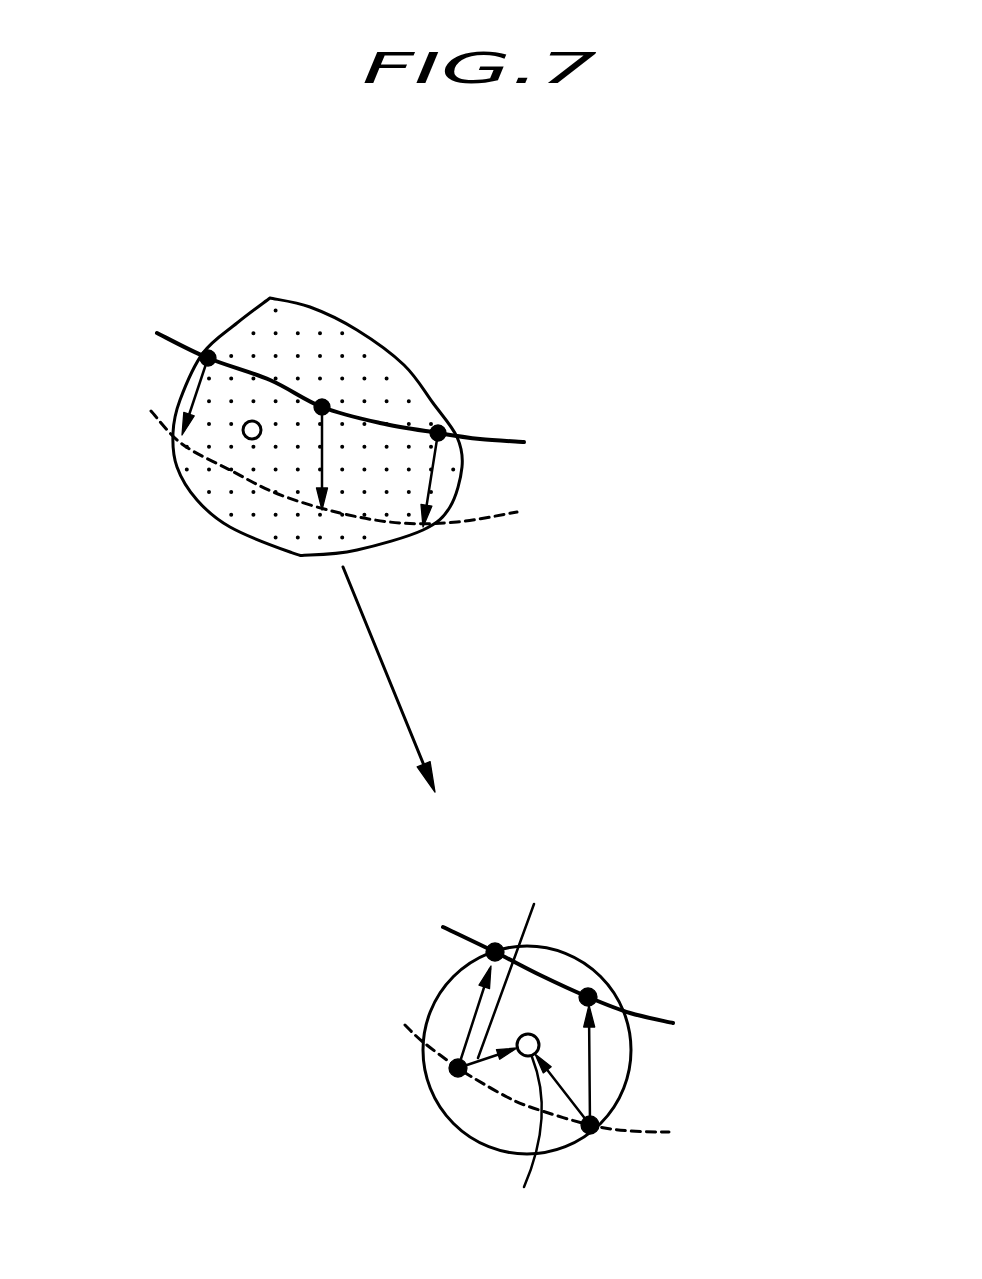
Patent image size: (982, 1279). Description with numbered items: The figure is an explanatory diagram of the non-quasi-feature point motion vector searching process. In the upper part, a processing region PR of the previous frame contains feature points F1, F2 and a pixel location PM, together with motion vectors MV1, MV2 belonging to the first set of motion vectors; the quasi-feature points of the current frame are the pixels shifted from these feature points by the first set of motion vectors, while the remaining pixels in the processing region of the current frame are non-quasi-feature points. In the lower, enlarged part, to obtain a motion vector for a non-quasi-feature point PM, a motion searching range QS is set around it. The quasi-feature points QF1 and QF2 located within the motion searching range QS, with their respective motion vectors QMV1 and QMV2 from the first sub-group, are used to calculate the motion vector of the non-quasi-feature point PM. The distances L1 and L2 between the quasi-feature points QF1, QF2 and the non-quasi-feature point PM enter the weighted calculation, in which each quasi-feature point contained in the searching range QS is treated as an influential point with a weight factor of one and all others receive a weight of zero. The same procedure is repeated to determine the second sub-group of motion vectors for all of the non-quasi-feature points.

The projection region (partial image region) PR is at (404, 366).
The non-quasi-feature point PM is at (253, 421).
The first feature point F1 is at (208, 352).
The second feature point F2 is at (322, 405).
The first motion vector MV1 is at (190, 400).
The second motion vector MV2 is at (319, 454).
The motion searching range QS is at (630, 1015).
The quasi-feature point QF1 is at (456, 1069).
The quasi-feature point QF2 is at (592, 1127).
The motion vector for quasi-feature point QMV1 is at (475, 1018).
The motion vector for quasi-feature point QMV2 is at (590, 1070).
The distance between quasi-feature point and non-quasi-feature point L1 is at (517, 957).
The distance between quasi-feature point and non-quasi-feature point L2 is at (524, 1148).